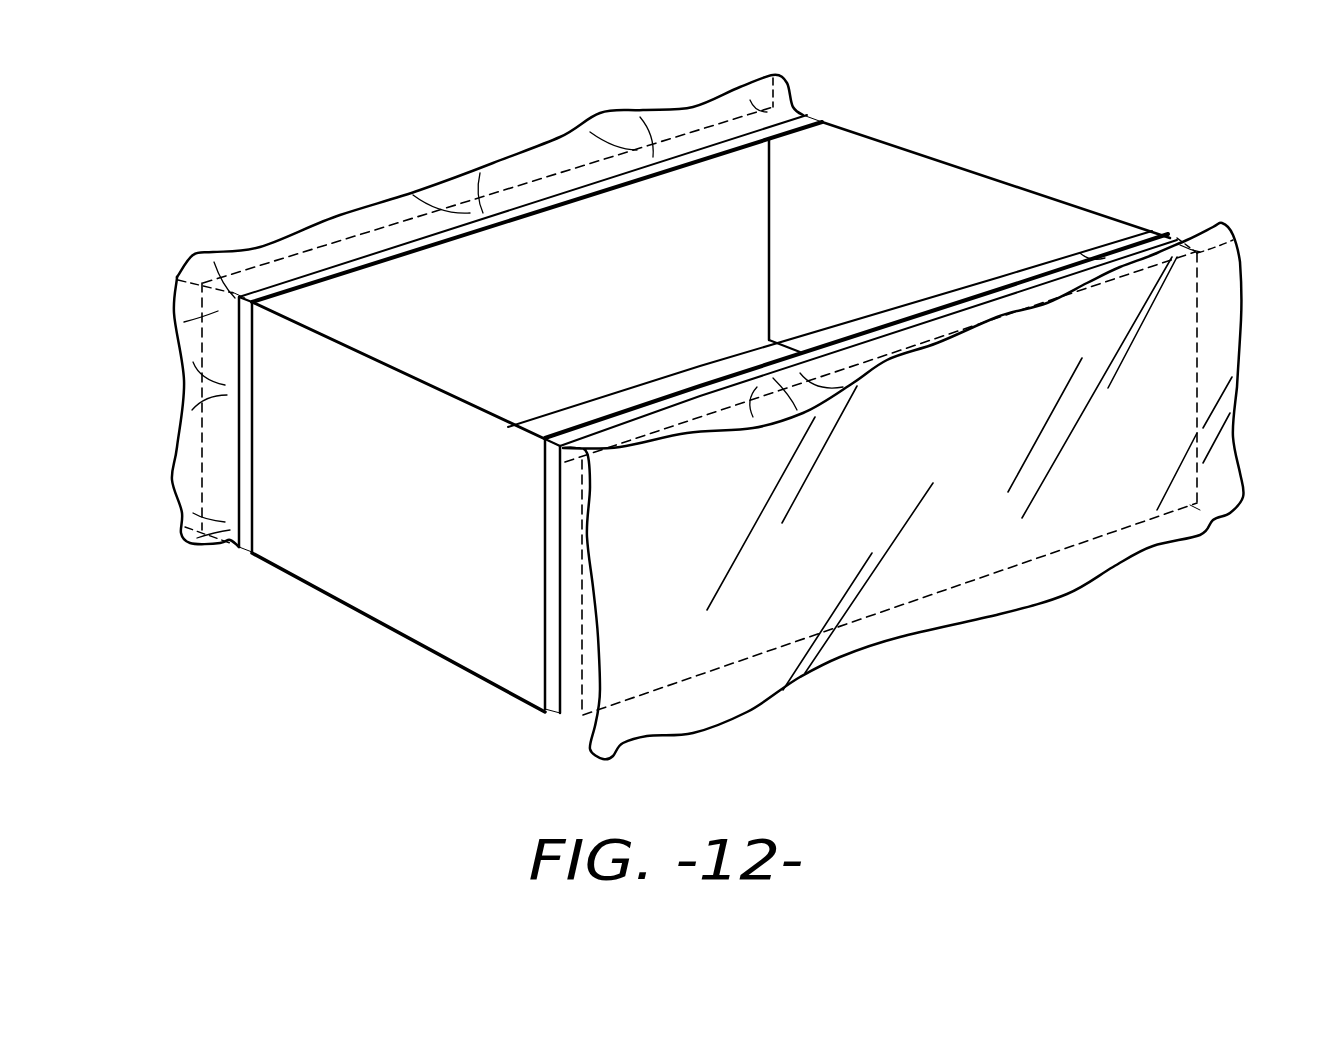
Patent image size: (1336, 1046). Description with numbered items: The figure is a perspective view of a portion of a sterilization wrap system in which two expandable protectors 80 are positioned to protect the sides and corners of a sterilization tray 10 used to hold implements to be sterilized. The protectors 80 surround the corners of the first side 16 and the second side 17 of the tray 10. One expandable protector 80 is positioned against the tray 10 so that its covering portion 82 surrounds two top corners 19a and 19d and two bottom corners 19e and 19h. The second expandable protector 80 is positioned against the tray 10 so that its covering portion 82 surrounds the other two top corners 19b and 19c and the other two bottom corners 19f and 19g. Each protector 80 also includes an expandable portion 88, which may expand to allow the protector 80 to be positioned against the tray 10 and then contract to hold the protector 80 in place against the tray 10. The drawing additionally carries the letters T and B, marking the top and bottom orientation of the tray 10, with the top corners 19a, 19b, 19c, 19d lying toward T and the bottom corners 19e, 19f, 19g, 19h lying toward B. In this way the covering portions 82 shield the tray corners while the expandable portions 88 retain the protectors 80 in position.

The sterilization tray 10 is at (922, 190).
The first side 16 is at (500, 142).
The second side 17 is at (1073, 602).
The top corner 19a is at (197, 280).
The top corner 19b is at (560, 468).
The top corner 19c is at (1230, 245).
The top corner 19d is at (770, 78).
The bottom corner 19e is at (180, 535).
The bottom corner 19f is at (583, 740).
The bottom corner 19g is at (1220, 522).
The bottom corner 19h is at (769, 340).
The expandable protector 80 is at (190, 385).
The covering portion 82 is at (670, 122).
The expandable portion 88 is at (605, 188).
The top T is at (130, 283).
The bottom B is at (157, 526).